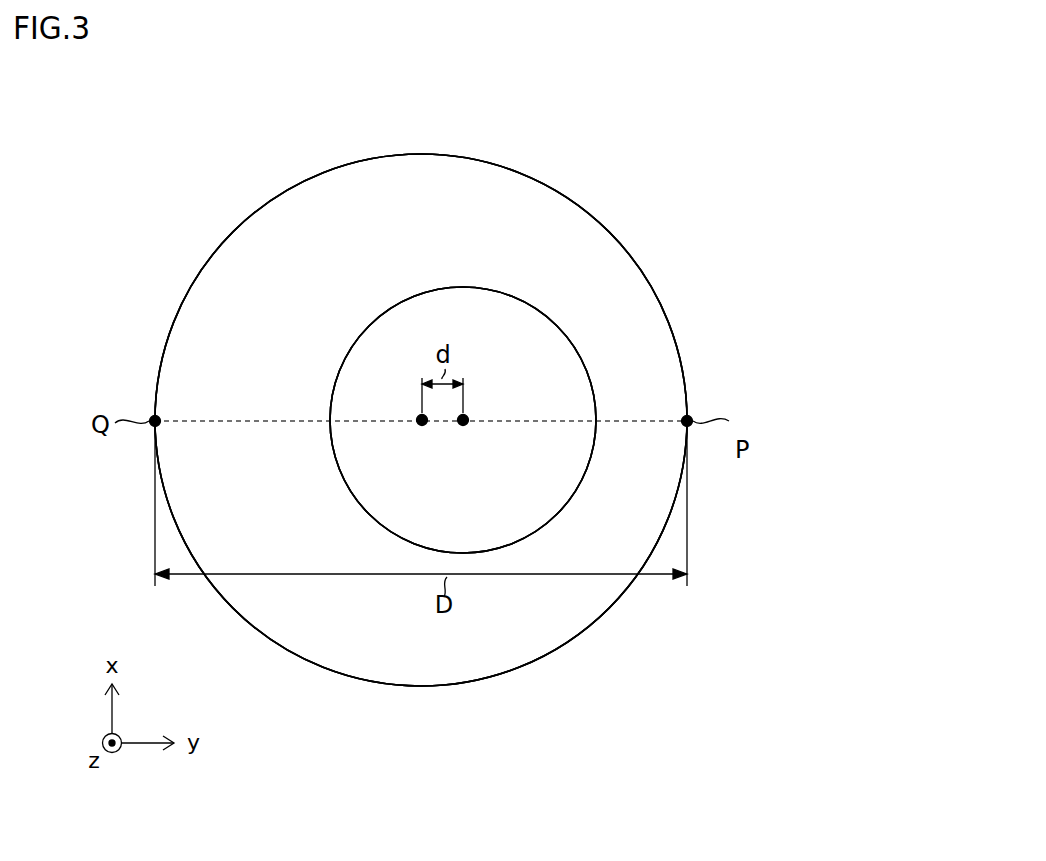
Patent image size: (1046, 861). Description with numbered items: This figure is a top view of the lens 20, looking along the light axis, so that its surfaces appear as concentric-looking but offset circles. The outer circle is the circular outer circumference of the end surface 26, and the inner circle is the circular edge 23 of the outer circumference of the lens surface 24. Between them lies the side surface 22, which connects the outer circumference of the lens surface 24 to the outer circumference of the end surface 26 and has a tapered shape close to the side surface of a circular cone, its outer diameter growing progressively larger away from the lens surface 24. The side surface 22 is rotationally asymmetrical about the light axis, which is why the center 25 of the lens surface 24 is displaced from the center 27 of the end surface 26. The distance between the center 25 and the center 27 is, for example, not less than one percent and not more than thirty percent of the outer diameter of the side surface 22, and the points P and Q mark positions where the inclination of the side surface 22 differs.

The lens 20 is at (557, 141).
The side surface 22 is at (630, 306).
The edge of the outer circumference of the lens surface 23 is at (577, 348).
The lens surface 24 is at (563, 393).
The center of the lens surface 25 is at (466, 426).
The end surface 26 is at (636, 257).
The center of the end surface 27 is at (419, 426).